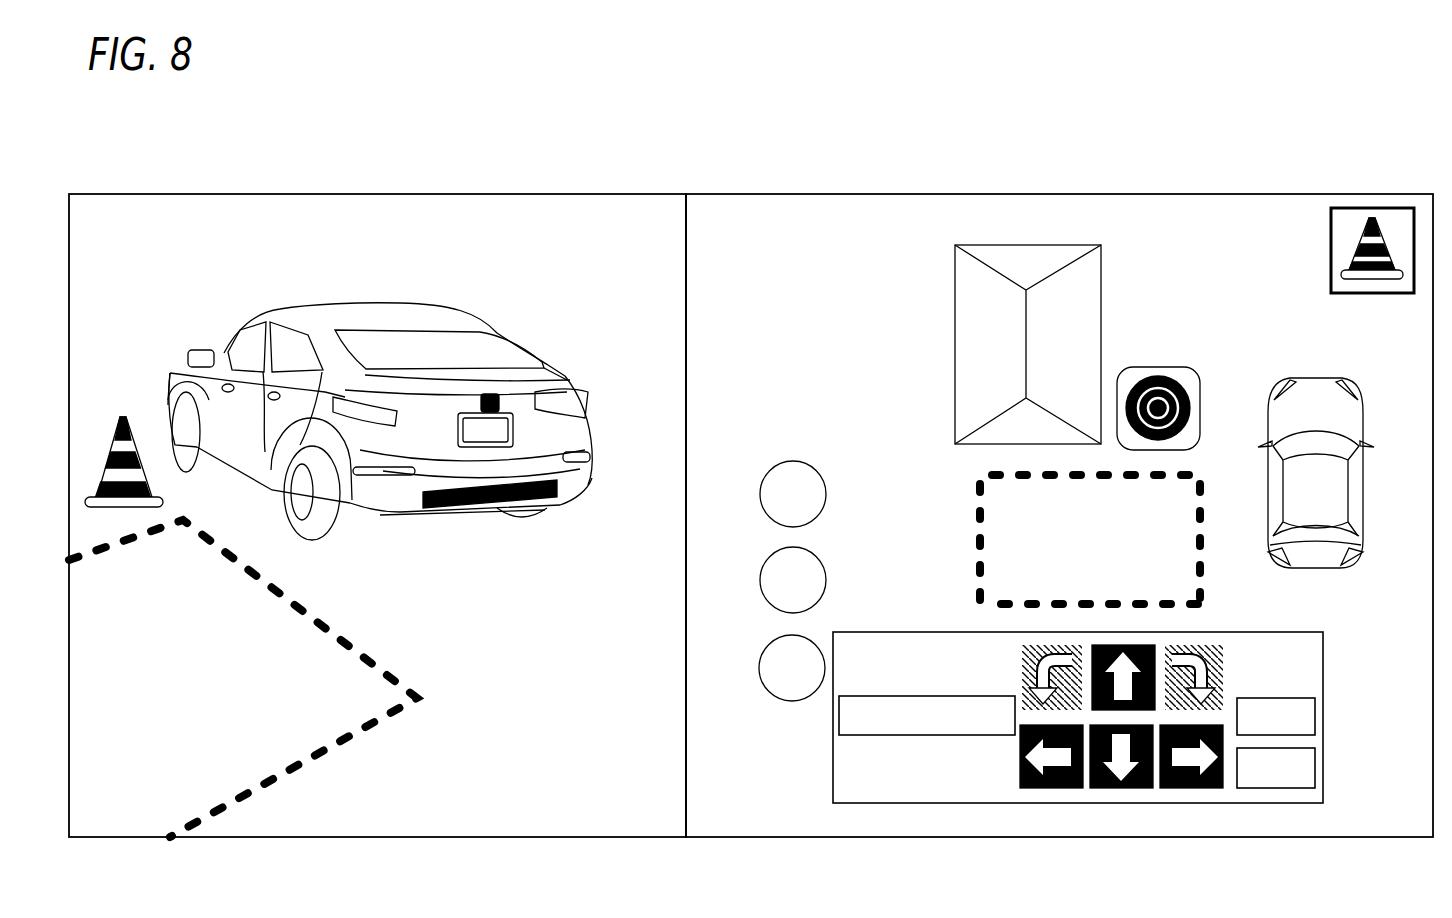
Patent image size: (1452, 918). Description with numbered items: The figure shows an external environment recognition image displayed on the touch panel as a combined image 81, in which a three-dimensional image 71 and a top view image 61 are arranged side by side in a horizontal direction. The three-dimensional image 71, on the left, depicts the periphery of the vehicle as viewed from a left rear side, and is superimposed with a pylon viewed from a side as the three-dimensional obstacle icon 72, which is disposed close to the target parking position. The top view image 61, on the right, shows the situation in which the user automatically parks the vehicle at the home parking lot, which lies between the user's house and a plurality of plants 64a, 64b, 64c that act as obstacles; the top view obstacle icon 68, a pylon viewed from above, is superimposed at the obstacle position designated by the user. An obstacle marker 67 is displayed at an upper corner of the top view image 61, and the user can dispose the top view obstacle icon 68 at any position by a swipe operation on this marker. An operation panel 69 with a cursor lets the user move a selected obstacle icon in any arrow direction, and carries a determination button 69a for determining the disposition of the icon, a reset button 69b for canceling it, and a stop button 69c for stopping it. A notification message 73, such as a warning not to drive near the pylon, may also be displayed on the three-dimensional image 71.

The three-dimensional image 71 is at (607, 194).
The three-dimensional obstacle icon 72 is at (123, 417).
The combined image 81 is at (1059, 489).
The top view image 61 is at (1347, 194).
The obstacle marker 67 is at (1331, 228).
The notification message 73 is at (1047, 245).
The top view obstacle icon 68 is at (1157, 367).
The plant (obstacle) 64a is at (760, 494).
The plant (obstacle) 64b is at (760, 580).
The plant (obstacle) 64c is at (759, 668).
The operation panel 69 is at (1075, 761).
The determination button 69a is at (839, 730).
The reset button 69b is at (1318, 712).
The stop button 69c is at (1318, 765).